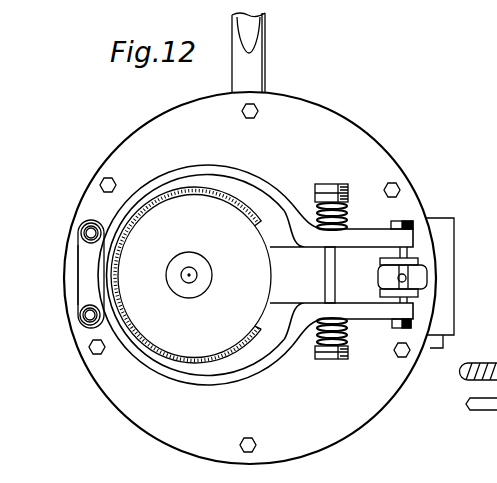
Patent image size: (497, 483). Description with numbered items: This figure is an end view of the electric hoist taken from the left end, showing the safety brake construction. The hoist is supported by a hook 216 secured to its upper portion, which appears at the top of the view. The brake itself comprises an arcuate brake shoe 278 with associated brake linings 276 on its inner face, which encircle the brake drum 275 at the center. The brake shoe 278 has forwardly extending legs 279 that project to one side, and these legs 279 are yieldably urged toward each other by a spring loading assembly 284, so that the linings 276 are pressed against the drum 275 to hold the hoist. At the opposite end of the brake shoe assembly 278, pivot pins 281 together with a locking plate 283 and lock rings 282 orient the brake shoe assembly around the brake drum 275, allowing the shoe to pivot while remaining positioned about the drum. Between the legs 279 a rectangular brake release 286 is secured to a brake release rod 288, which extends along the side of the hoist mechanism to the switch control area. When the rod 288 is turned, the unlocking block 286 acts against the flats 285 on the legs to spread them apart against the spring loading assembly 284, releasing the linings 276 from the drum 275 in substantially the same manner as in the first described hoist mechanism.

The hook 216 is at (267, 70).
The brake drum 275 is at (175, 210).
The brake linings 276 is at (240, 200).
The arcuate brake shoe 278 is at (221, 173).
The forwardly extending legs 279 is at (360, 231).
The pivot pins 281 is at (81, 226).
The lock rings 282 is at (79, 328).
The locking plate 283 is at (88, 281).
The spring loading assembly 284 is at (336, 184).
The flats 285 is at (384, 262).
The brake release 286 is at (416, 276).
The brake release rod 288 is at (386, 279).